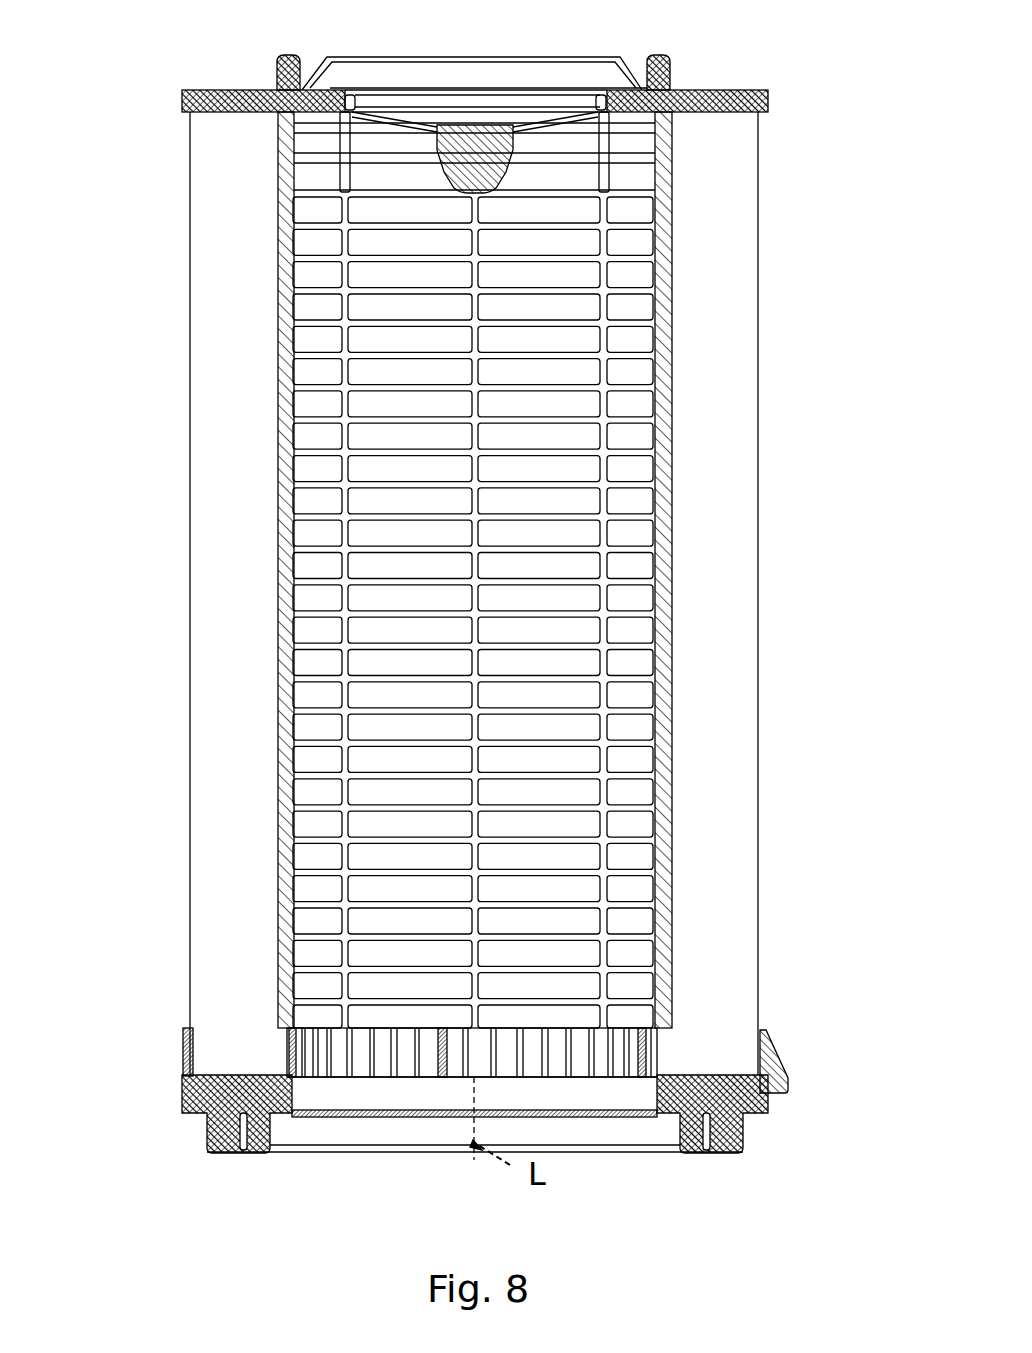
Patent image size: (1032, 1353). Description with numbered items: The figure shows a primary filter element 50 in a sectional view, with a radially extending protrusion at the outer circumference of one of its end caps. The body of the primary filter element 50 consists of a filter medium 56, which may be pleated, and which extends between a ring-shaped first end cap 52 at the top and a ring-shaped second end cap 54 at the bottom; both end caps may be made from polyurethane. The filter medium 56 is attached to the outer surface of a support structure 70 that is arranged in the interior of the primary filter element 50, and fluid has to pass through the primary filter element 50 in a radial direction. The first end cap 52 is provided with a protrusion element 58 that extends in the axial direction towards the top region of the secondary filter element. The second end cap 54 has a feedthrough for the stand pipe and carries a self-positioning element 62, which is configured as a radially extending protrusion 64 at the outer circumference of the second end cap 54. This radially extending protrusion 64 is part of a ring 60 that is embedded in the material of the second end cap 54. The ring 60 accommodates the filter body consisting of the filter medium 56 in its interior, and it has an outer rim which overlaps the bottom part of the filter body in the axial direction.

The primary filter element 50 is at (138, 92).
The first end cap 52 is at (702, 97).
The second end cap 54 is at (218, 1116).
The filter medium 56 is at (742, 779).
The protrusion element 58 is at (468, 157).
The ring 60 is at (190, 1063).
The self-positioning element 62 is at (828, 1015).
The radially extending protrusion 64 is at (780, 1060).
The support structure 70 is at (357, 268).